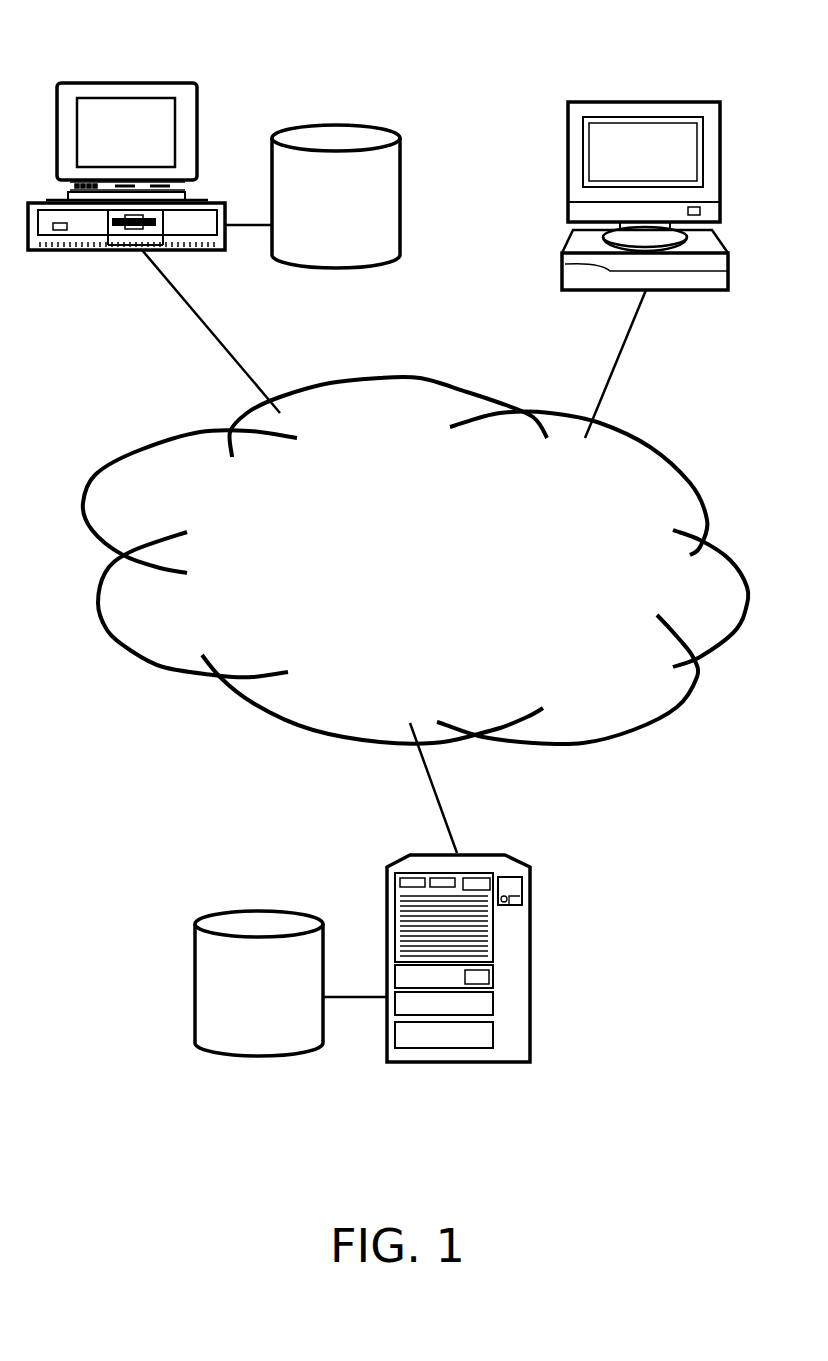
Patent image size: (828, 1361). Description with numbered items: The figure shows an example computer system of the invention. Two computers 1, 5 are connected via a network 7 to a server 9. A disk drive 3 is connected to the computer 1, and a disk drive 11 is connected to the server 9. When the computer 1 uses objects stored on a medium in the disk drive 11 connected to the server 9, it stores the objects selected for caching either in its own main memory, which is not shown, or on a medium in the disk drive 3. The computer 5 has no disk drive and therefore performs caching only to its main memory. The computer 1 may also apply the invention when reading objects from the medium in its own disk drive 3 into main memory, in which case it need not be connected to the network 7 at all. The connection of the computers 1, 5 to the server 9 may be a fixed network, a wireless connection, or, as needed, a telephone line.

The computer 1 is at (138, 82).
The disk drive 3 is at (328, 255).
The computer 5 is at (640, 102).
The network 7 is at (410, 594).
The server 9 is at (470, 1062).
The disk drive 11 is at (273, 1040).